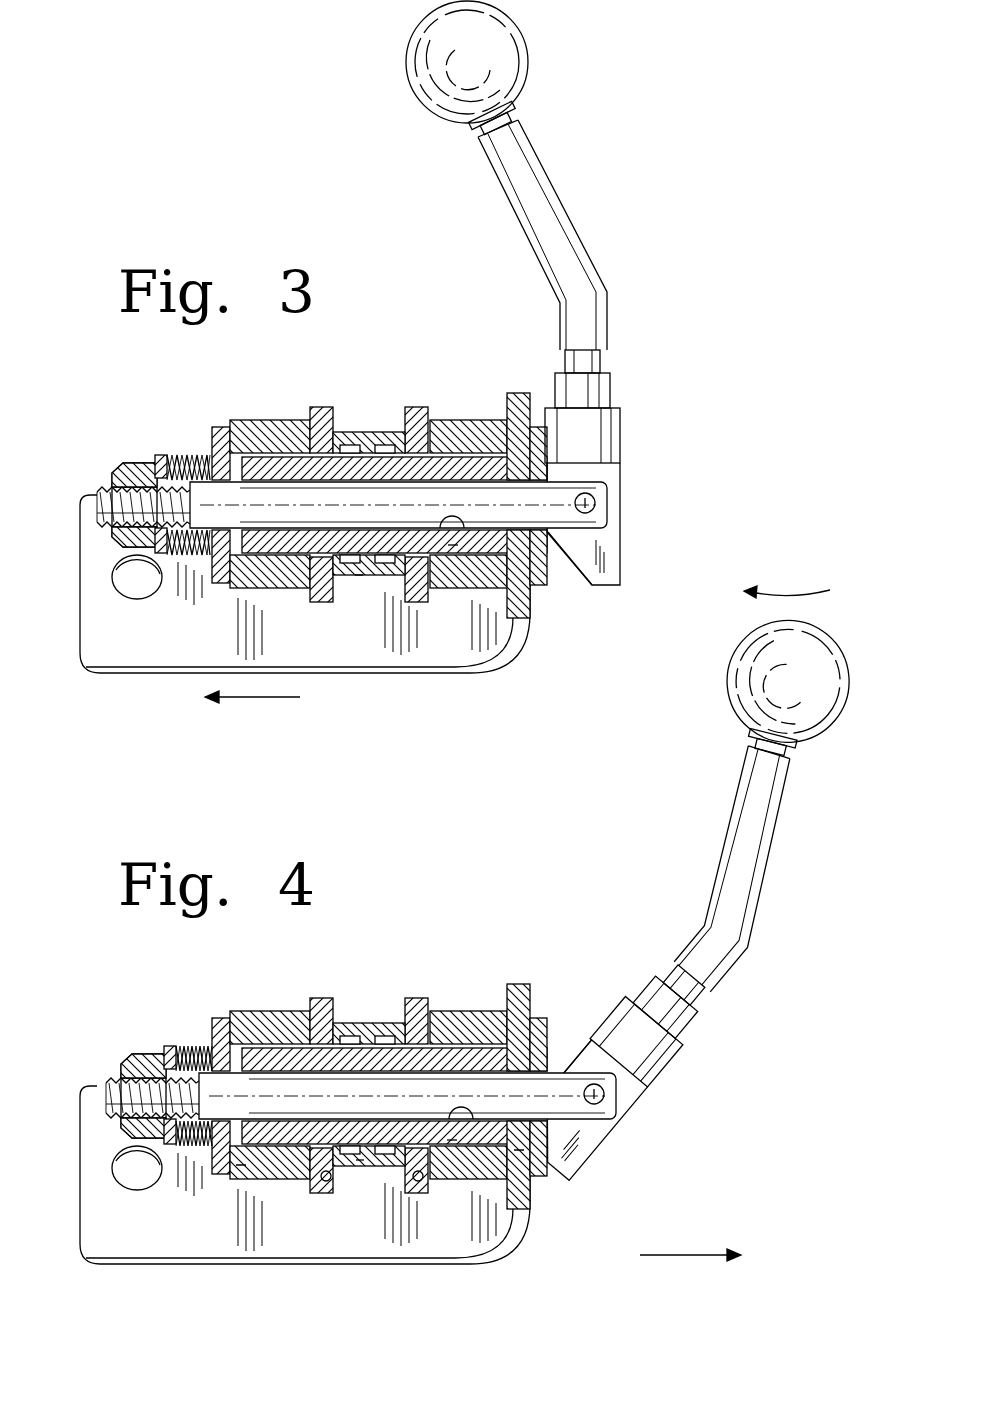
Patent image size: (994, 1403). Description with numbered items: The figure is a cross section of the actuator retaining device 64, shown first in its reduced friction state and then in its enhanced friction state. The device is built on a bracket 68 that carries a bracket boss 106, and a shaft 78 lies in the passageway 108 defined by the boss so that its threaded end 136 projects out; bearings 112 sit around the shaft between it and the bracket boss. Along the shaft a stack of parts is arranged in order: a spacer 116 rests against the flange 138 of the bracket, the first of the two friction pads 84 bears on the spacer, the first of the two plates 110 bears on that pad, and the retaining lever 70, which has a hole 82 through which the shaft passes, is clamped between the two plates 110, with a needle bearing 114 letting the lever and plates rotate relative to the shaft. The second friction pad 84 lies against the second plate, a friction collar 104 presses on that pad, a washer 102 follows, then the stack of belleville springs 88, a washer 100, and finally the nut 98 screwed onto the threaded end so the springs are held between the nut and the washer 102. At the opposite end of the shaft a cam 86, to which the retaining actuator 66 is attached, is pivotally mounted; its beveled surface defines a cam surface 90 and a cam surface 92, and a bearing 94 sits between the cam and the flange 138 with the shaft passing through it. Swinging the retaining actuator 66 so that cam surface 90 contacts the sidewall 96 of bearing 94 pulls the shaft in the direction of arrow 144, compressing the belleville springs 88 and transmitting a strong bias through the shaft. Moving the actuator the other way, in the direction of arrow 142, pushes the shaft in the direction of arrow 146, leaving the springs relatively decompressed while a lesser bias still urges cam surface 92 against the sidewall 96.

In FIG. 3, the actuator retaining device 64 is at (409, 356).
In FIG. 4, the actuator retaining device 64 is at (483, 956).
In FIG. 3, the retaining actuator 66 is at (560, 205).
In FIG. 4, the retaining actuator 66 is at (745, 793).
In FIG. 3, the bracket 68 is at (505, 668).
In FIG. 4, the bracket 68 is at (490, 1262).
In FIG. 3, the retaining lever 70 is at (365, 433).
In FIG. 4, the retaining lever 70 is at (365, 1024).
In FIG. 3, the shaft 78 is at (600, 498).
In FIG. 4, the shaft 78 is at (622, 1117).
In FIG. 3, the hole 82 is at (350, 428).
In FIG. 4, the hole 82 is at (350, 1019).
In FIG. 3, the friction pads 84 is at (318, 408).
In FIG. 4, the friction pads 84 is at (318, 999).
In FIG. 3, the cam 86 is at (612, 555).
In FIG. 4, the cam 86 is at (597, 1089).
In FIG. 3, the belleville springs 88 is at (194, 455).
In FIG. 4, the belleville springs 88 is at (197, 1046).
In FIG. 3, the cam surface 90 is at (570, 572).
In FIG. 4, the cam surface 92 is at (569, 1066).
In FIG. 3, the bearing 94 is at (543, 428).
In FIG. 4, the bearing 94 is at (672, 999).
In FIG. 3, the sidewall 96 is at (545, 588).
In FIG. 4, the sidewall 96 is at (540, 1020).
In FIG. 3, the nut 98 is at (122, 465).
In FIG. 4, the nut 98 is at (130, 1055).
In FIG. 3, the washer 100 is at (160, 560).
In FIG. 4, the washer 100 is at (160, 1150).
In FIG. 3, the washer 102 is at (222, 584).
In FIG. 4, the washer 102 is at (222, 1175).
In FIG. 3, the friction collar 104 is at (300, 588).
In FIG. 4, the friction collar 104 is at (298, 1180).
In FIG. 3, the bracket boss 106 is at (363, 575).
In FIG. 4, the bracket boss 106 is at (362, 1160).
In FIG. 3, the passageway 108 is at (453, 545).
In FIG. 4, the passageway 108 is at (452, 1140).
In FIG. 4, the plates 110 is at (327, 1182).
In FIG. 4, the bearings 112 is at (242, 1165).
In FIG. 3, the needle bearing 114 is at (387, 430).
In FIG. 4, the needle bearing 114 is at (387, 1021).
In FIG. 3, the spacer 116 is at (478, 420).
In FIG. 4, the spacer 116 is at (478, 1011).
In FIG. 3, the threaded end 136 is at (97, 490).
In FIG. 4, the threaded end 136 is at (104, 1080).
In FIG. 3, the flange 138 is at (516, 394).
In FIG. 4, the flange 138 is at (516, 985).
In FIG. 3, the arrow 142 is at (804, 590).
In FIG. 4, the arrow 144 is at (690, 1258).
In FIG. 3, the arrow 146 is at (270, 702).